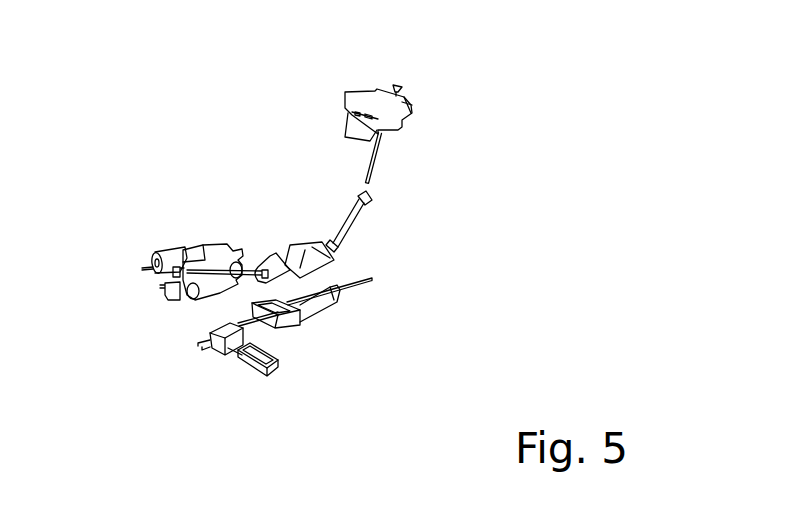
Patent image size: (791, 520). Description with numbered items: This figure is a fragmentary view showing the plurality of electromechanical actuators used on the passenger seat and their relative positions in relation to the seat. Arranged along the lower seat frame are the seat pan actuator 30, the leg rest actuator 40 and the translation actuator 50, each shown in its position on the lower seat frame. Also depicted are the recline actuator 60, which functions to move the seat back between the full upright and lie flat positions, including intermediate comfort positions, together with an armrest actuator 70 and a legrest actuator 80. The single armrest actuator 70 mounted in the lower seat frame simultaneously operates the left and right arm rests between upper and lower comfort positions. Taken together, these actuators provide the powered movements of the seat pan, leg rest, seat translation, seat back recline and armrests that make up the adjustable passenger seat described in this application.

The seat pan actuator 30 is at (245, 375).
The leg rest actuator 40 is at (197, 348).
The translation actuator 50 is at (338, 303).
The recline actuator 60 is at (350, 227).
The armrest actuator 70 is at (188, 242).
The legrest actuator 80 is at (427, 103).